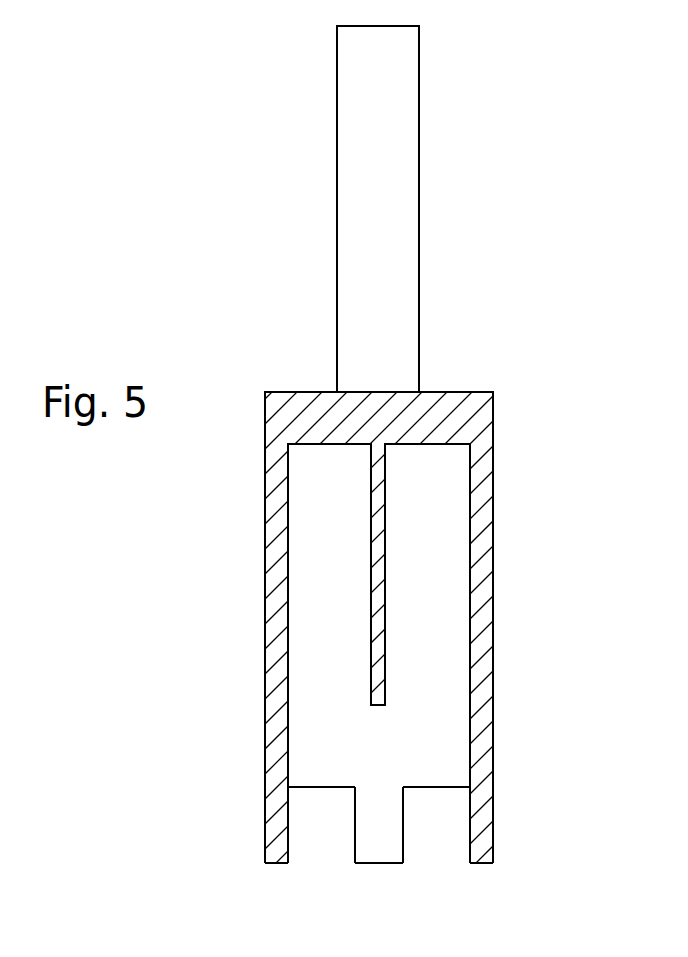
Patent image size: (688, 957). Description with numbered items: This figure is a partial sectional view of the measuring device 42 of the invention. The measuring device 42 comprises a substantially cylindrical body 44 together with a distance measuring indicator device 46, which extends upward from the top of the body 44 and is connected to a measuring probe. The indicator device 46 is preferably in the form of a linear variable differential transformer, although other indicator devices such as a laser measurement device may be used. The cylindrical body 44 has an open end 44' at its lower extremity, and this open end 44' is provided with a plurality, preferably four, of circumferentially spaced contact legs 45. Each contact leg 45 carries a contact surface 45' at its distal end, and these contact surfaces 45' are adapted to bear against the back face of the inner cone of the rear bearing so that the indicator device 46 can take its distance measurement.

The measuring device 42 is at (524, 466).
The cylindrical body 44 is at (420, 653).
The open end 44' is at (378, 861).
The contact legs 45 is at (420, 848).
The contact surface 45' is at (379, 902).
The distance measuring indicator device 46 is at (419, 237).